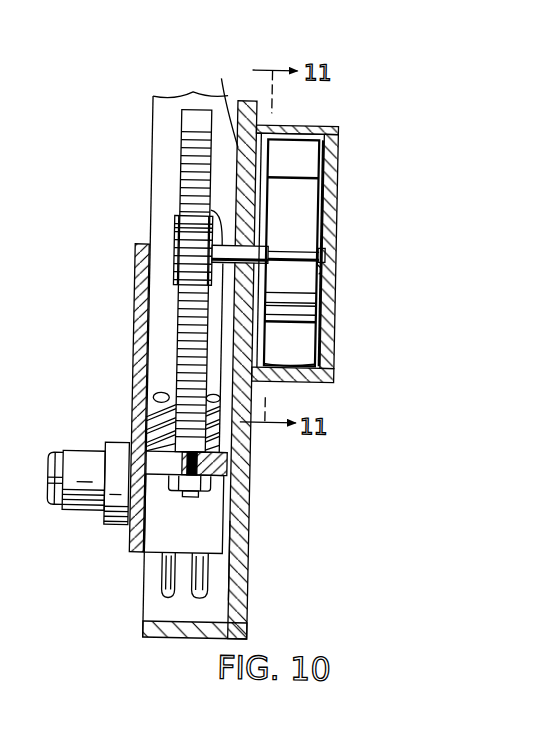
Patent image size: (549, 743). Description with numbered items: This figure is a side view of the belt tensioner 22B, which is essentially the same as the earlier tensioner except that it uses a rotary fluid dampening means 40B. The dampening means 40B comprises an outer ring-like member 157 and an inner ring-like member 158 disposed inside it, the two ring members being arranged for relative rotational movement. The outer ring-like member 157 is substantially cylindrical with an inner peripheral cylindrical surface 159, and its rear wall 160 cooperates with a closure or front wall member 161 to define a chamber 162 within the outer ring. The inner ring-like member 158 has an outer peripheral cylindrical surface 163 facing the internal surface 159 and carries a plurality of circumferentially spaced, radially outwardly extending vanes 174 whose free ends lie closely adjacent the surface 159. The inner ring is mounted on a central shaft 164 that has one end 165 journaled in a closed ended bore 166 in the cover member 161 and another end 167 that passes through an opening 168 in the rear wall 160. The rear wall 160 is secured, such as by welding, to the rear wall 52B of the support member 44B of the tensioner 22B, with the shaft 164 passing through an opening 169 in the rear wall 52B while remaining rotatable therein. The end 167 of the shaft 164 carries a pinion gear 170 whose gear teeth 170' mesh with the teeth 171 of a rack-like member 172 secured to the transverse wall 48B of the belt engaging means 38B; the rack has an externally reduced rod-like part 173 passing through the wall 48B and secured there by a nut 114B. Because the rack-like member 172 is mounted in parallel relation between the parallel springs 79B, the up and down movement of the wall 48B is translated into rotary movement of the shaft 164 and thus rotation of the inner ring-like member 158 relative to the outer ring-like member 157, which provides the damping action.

The tensioner 22B is at (148, 335).
The rear wall 160 is at (211, 106).
The rack-like member 172 is at (183, 121).
The end of the shaft 167 is at (192, 204).
The gear teeth 170' is at (140, 232).
The pinion gear 170 is at (140, 259).
The teeth 171 is at (187, 344).
The parallel springs 79B is at (158, 413).
The reduced rod-like part 173 is at (157, 452).
The belt engaging means 38B is at (120, 546).
The outer ring-like member 157 is at (300, 125).
The fluid dampening means 40B is at (343, 120).
The chamber 162 is at (320, 128).
The vanes 174 is at (307, 160).
The front wall member 161 is at (327, 186).
The inner ring-like member 158 is at (327, 210).
The opening 168 is at (266, 245).
The central shaft 164 is at (288, 201).
The end of the shaft 165 is at (329, 254).
The closed ended bore 166 is at (326, 274).
The opening 169 is at (286, 278).
The outer peripheral cylindrical surface 163 is at (307, 297).
The inner peripheral cylindrical surface 159 is at (307, 362).
The transverse wall 48B is at (236, 461).
The nut 114B is at (221, 480).
The support member 44B is at (257, 522).
The rear wall 52B is at (258, 557).